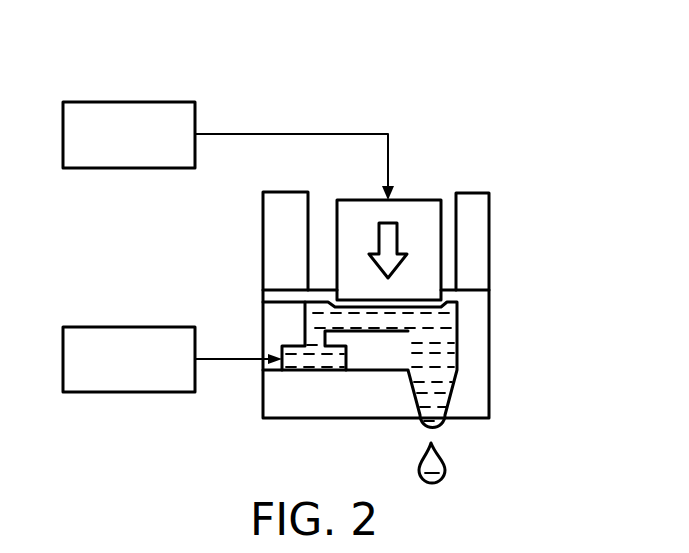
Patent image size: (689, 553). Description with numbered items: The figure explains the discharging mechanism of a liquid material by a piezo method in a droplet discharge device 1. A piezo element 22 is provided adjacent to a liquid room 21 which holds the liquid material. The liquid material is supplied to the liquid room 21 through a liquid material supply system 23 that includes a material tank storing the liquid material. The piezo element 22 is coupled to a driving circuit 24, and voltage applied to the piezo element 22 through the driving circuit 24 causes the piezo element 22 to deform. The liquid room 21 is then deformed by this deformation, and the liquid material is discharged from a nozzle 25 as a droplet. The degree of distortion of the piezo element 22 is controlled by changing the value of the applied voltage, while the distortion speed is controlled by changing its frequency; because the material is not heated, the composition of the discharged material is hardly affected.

The liquid dispensing system 1 is at (481, 88).
The liquid room 21 is at (430, 310).
The piezo element 22 is at (414, 200).
The liquid material supply system 23 is at (127, 327).
The driving circuit 24 is at (127, 102).
The nozzle 25 is at (443, 422).